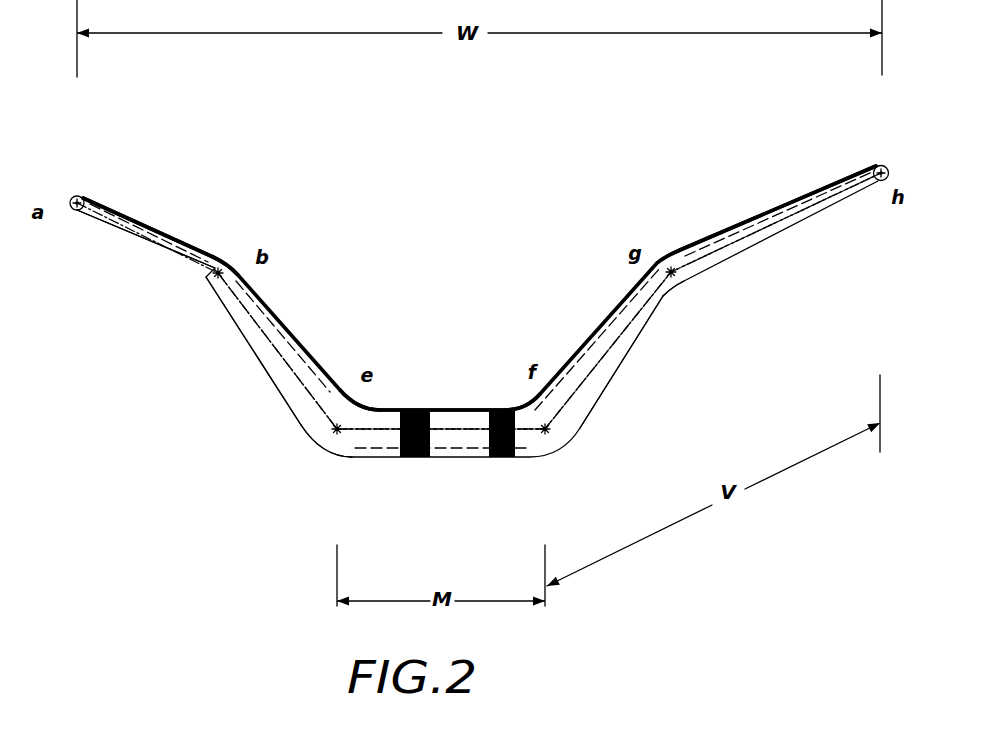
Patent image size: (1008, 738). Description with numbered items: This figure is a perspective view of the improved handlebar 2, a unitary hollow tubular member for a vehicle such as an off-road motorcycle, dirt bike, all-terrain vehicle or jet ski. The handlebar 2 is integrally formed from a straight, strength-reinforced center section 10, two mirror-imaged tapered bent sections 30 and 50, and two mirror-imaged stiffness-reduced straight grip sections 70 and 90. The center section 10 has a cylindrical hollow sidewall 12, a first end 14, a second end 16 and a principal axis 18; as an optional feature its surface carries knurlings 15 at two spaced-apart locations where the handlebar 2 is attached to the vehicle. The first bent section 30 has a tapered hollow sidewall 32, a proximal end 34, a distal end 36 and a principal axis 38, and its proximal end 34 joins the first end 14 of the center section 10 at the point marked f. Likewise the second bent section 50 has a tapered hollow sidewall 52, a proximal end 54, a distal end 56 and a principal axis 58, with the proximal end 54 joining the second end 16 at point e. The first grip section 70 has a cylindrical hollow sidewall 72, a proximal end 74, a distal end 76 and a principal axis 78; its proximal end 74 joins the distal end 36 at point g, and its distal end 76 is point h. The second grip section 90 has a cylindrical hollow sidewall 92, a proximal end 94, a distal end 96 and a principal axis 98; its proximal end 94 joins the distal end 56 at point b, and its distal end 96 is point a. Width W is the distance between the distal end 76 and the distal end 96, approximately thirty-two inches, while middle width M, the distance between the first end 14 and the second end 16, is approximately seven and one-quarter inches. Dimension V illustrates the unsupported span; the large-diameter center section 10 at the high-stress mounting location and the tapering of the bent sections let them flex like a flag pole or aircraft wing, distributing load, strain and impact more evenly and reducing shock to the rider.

The improved handlebar 2 is at (595, 604).
The center section 10 is at (462, 408).
The cylindrical hollow sidewall 12 is at (470, 412).
The first end 14 is at (527, 410).
The knurlings 15 is at (500, 458).
The second end 16 is at (341, 425).
The principal axis 18 is at (440, 428).
The first bent section 30 is at (650, 316).
The tapered hollow sidewall 32 is at (604, 390).
The proximal end 34 is at (548, 429).
The distal end 36 is at (662, 291).
The principal axis 38 is at (629, 356).
The second bent section 50 is at (265, 372).
The tapered hollow sidewall 52 is at (291, 410).
The proximal end 54 is at (327, 418).
The distal end 56 is at (213, 278).
The principal axis 58 is at (270, 340).
The first grip section 70 is at (753, 215).
The cylindrical hollow sidewall 72 is at (703, 238).
The proximal end 74 is at (678, 255).
The distal end 76 is at (877, 162).
The principal axis 78 is at (805, 205).
The second grip section 90 is at (154, 220).
The cylindrical hollow sidewall 92 is at (182, 233).
The proximal end 94 is at (214, 254).
The distal end 96 is at (77, 195).
The principal axis 98 is at (123, 210).